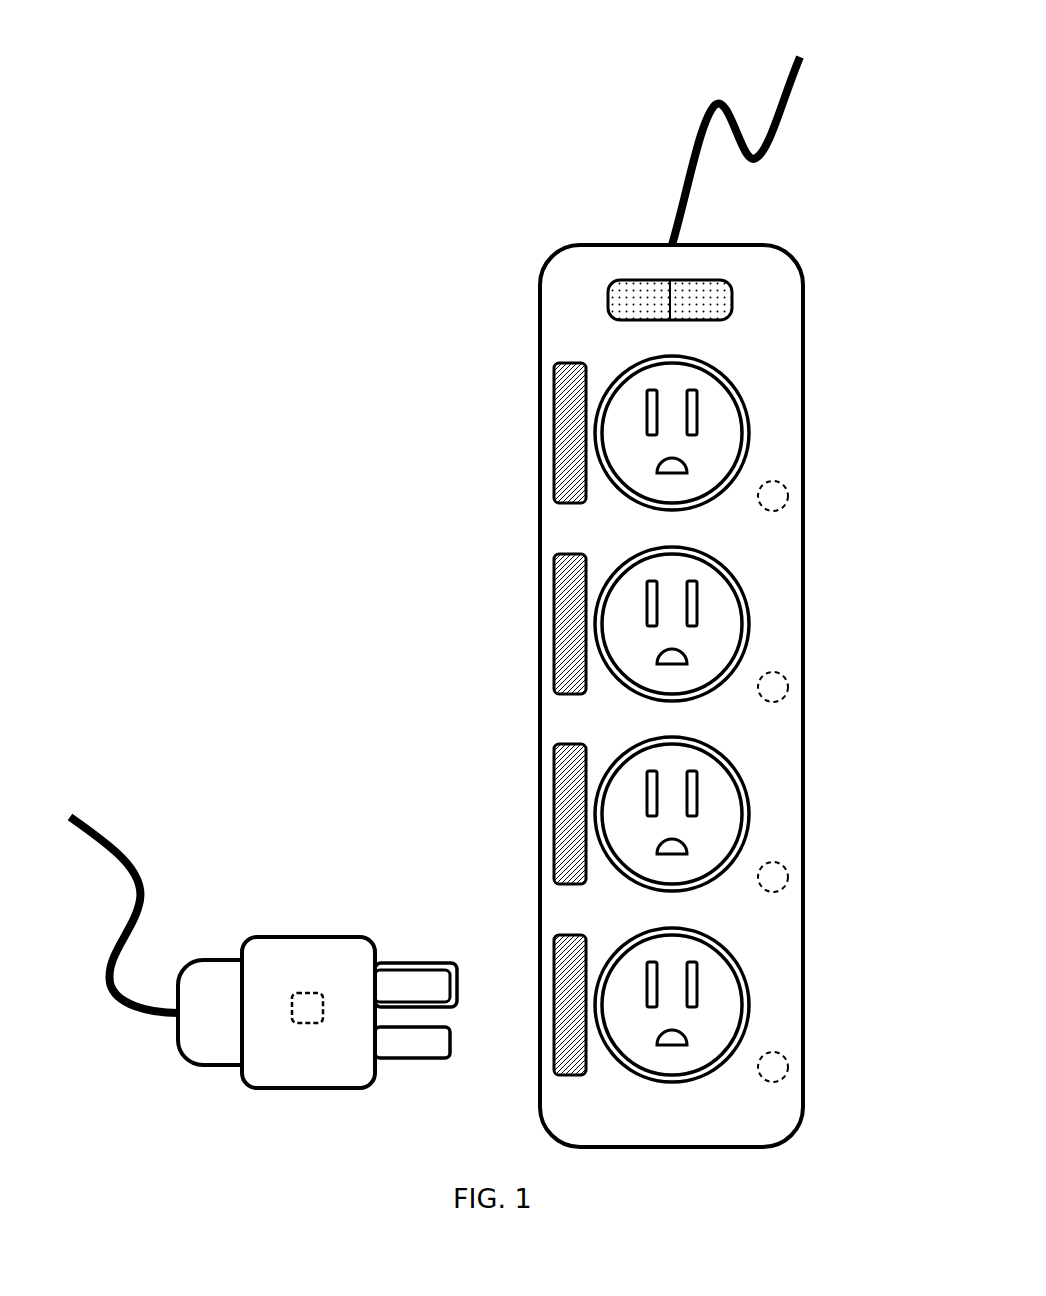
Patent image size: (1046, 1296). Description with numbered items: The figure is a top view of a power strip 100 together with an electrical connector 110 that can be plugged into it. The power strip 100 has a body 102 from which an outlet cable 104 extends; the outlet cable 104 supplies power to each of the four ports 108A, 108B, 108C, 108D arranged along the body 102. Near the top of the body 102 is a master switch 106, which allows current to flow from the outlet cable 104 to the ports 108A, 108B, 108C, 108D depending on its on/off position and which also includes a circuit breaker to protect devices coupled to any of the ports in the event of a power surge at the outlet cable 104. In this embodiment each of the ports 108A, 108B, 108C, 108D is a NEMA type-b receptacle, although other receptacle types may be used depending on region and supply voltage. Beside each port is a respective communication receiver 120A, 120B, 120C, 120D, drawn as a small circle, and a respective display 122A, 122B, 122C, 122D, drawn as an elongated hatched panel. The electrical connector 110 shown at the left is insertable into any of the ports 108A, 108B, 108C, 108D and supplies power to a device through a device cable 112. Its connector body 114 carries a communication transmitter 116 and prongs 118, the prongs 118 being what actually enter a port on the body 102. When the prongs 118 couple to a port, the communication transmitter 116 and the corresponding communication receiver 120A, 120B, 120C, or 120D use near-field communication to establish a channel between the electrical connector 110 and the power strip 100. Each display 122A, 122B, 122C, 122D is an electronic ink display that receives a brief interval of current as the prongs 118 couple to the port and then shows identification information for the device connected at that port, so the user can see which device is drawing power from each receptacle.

The power strip 100 is at (493, 193).
The body 102 is at (822, 258).
The outlet cable 104 is at (802, 68).
The master switch 106 is at (732, 299).
The port 108A is at (747, 403).
The port 108B is at (747, 594).
The port 108C is at (747, 784).
The port 108D is at (747, 975).
The electrical connector 110 is at (327, 830).
The device cable 112 is at (103, 837).
The connector body 114 is at (248, 937).
The communication transmitter 116 is at (322, 995).
The prongs 118 is at (450, 1030).
The communication receiver 120A is at (790, 493).
The communication receiver 120B is at (790, 684).
The communication receiver 120C is at (790, 874).
The communication receiver 120D is at (790, 1064).
The display 122A is at (557, 363).
The display 122B is at (557, 555).
The display 122C is at (557, 743).
The display 122D is at (557, 1073).